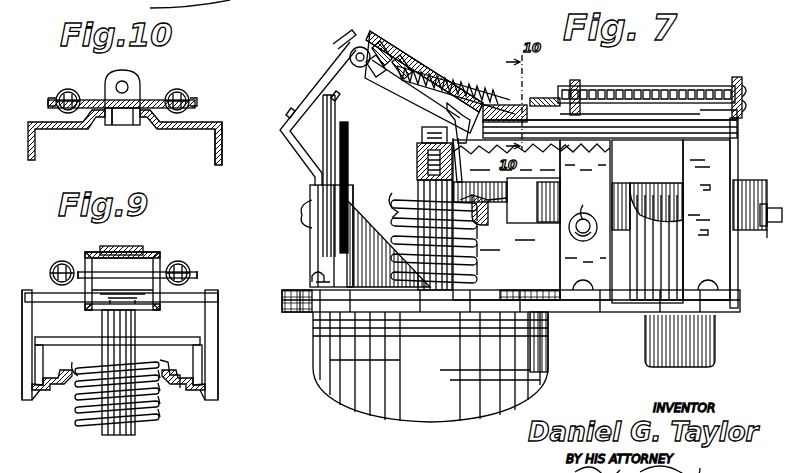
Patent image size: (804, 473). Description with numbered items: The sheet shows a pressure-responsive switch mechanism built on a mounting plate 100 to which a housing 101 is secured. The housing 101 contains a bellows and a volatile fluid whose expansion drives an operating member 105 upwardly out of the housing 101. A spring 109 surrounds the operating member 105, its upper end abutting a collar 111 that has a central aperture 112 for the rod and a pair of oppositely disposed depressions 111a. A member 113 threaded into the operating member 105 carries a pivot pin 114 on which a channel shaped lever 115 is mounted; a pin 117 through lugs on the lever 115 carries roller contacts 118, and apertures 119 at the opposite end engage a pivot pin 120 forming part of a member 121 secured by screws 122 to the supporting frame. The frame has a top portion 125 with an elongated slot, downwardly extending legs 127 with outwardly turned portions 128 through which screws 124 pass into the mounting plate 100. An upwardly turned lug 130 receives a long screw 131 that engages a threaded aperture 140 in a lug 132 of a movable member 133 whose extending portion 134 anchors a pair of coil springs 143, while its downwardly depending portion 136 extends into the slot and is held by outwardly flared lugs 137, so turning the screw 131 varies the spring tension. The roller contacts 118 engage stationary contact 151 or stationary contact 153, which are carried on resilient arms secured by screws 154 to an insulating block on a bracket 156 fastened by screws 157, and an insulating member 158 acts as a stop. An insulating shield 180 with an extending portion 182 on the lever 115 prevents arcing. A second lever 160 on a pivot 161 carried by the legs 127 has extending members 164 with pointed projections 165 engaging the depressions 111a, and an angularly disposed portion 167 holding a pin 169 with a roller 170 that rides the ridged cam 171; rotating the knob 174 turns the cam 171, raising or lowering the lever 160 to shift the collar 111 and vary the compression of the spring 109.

In FIG. 7, the mounting plate 100 is at (598, 312).
In FIG. 7, the housing 101 is at (318, 385).
In FIG. 9, the operating member 105 is at (140, 422).
In FIG. 7, the operating member 105 is at (479, 246).
In FIG. 9, the spring 109 is at (95, 408).
In FIG. 7, the spring 109 is at (396, 194).
In FIG. 9, the collar 111 is at (172, 385).
In FIG. 7, the collar 111 is at (504, 222).
In FIG. 9, the depressions 111a is at (44, 400).
In FIG. 9, the aperture 112 is at (140, 358).
In FIG. 7, the aperture 112 is at (412, 190).
In FIG. 7, the member 113 is at (418, 150).
In FIG. 7, the pivot pin 114 is at (412, 106).
In FIG. 9, the lever 115 is at (158, 262).
In FIG. 7, the lever 115 is at (418, 62).
In FIG. 7, the pin 117 is at (362, 46).
In FIG. 7, the roller contacts 118 is at (374, 80).
In FIG. 7, the apertures 119 is at (457, 148).
In FIG. 7, the pivot pin 120 is at (486, 140).
In FIG. 7, the member 121 is at (540, 100).
In FIG. 7, the screws 122 is at (506, 104).
In FIG. 7, the screws 124 is at (585, 302).
In FIG. 10, the top portion 125 is at (196, 125).
In FIG. 9, the top portion 125 is at (44, 292).
In FIG. 7, the top portion 125 is at (742, 120).
In FIG. 10, the legs 127 is at (220, 150).
In FIG. 9, the legs 127 is at (30, 293).
In FIG. 7, the legs 127 is at (616, 166).
In FIG. 7, the outwardly turned portions 128 is at (722, 301).
In FIG. 7, the lug 130 is at (738, 82).
In FIG. 7, the screw 131 is at (672, 72).
In FIG. 10, the lug 132 is at (134, 81).
In FIG. 7, the lug 132 is at (576, 82).
In FIG. 10, the movable member 133 is at (147, 101).
In FIG. 10, the extending portion 134 is at (194, 102).
In FIG. 10, the downwardly depending portion 136 is at (125, 126).
In FIG. 7, the downwardly depending portion 136 is at (555, 113).
In FIG. 10, the lugs 137 is at (110, 122).
In FIG. 7, the lugs 137 is at (545, 150).
In FIG. 10, the threaded aperture 140 is at (119, 82).
In FIG. 10, the coil springs 143 is at (62, 90).
In FIG. 9, the coil springs 143 is at (68, 262).
In FIG. 7, the coil springs 143 is at (478, 86).
In FIG. 7, the stationary contact 151 is at (350, 90).
In FIG. 7, the stationary contact 153 is at (349, 38).
In FIG. 7, the screws 154 is at (303, 215).
In FIG. 7, the bracket 156 is at (324, 265).
In FIG. 7, the screws 157 is at (311, 277).
In FIG. 7, the insulating member 158 is at (349, 166).
In FIG. 9, the lever 160 is at (182, 340).
In FIG. 7, the lever 160 is at (638, 192).
In FIG. 7, the pivot 161 is at (583, 212).
In FIG. 9, the extending members 164 is at (38, 350).
In FIG. 9, the pointed projection 165 is at (32, 382).
In FIG. 7, the angularly disposed portion 167 is at (745, 180).
In FIG. 7, the pin 169 is at (780, 200).
In FIG. 7, the roller 170 is at (756, 234).
In FIG. 7, the cam 171 is at (634, 272).
In FIG. 7, the knob 174 is at (718, 355).
In FIG. 9, the insulating shield 180 is at (140, 242).
In FIG. 7, the extending portion 182 is at (383, 40).